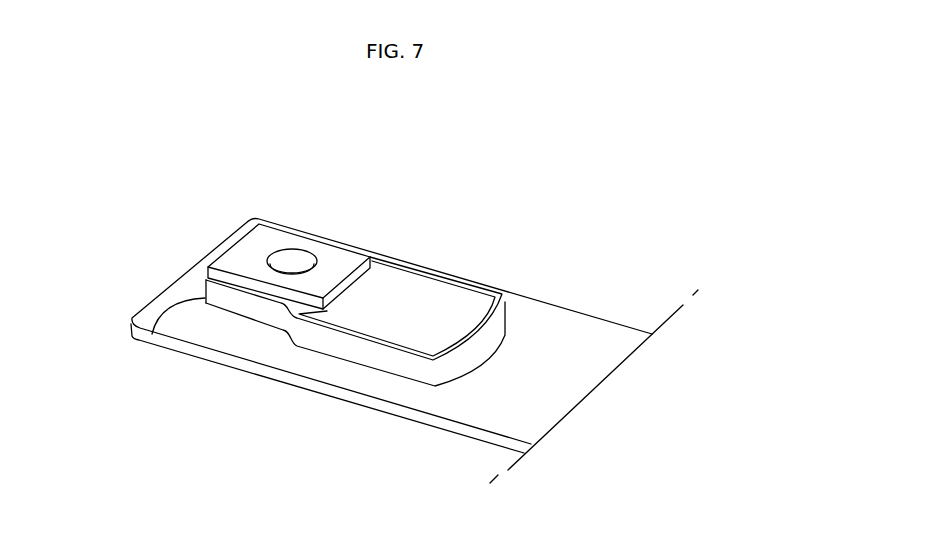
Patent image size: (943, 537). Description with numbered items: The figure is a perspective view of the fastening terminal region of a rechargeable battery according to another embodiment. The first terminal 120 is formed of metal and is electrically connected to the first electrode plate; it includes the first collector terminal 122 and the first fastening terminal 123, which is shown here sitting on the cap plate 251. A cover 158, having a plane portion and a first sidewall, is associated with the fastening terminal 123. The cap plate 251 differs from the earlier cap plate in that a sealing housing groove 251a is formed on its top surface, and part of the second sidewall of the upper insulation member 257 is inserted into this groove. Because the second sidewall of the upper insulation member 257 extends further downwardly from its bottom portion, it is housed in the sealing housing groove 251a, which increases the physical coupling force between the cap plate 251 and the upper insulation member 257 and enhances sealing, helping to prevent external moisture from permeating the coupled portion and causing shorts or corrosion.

The first terminal 120 is at (412, 196).
The first collector terminal 122 is at (280, 262).
The first fastening terminal 123 is at (341, 260).
The cover 158 is at (423, 283).
The upper insulation member 257 is at (481, 288).
The cap plate 251 is at (184, 287).
The sealing housing groove 251a is at (152, 334).